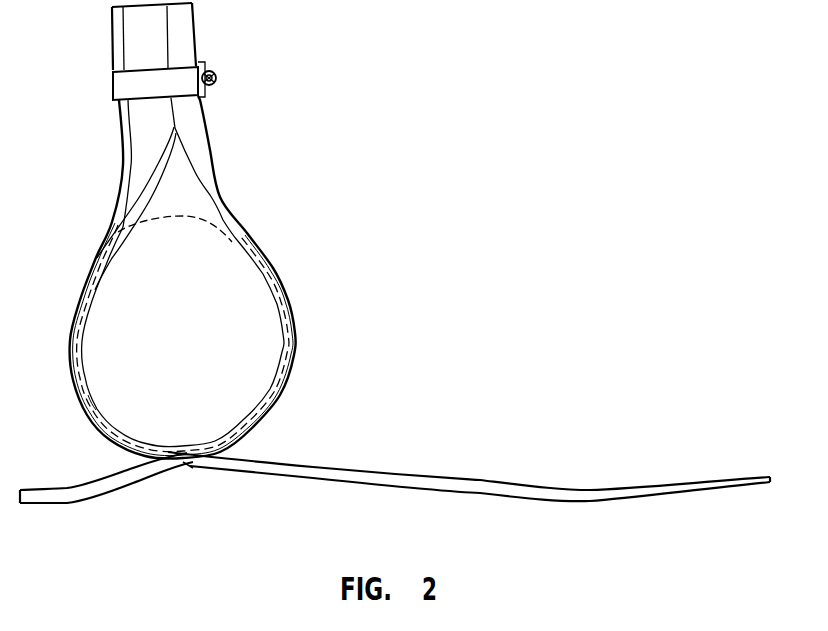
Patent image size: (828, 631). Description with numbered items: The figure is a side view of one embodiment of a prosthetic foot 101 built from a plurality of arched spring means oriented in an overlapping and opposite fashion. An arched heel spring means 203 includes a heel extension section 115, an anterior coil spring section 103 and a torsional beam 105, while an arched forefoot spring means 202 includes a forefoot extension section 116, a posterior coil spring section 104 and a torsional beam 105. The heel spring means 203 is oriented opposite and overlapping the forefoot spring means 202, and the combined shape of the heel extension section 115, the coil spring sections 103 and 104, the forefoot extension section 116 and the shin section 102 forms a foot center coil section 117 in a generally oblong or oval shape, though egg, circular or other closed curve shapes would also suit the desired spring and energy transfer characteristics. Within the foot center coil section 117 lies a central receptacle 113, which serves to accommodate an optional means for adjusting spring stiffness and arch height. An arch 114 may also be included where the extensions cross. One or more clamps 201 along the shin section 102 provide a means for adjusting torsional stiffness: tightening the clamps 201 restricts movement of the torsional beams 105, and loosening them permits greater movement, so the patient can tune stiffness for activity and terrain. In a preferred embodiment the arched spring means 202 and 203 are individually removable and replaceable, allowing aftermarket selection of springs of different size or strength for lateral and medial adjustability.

The shin section 102 is at (197, 33).
The clamp 201 is at (218, 78).
The torsional beam 105 is at (192, 123).
The receptacle 113 is at (178, 265).
The prosthetic foot 101 is at (275, 268).
The anterior coil spring section 103 is at (295, 325).
The arched heel spring means 203 is at (287, 397).
The foot center coil section 117 is at (122, 228).
The posterior coil spring section 104 is at (82, 300).
The arched forefoot spring means 202 is at (93, 400).
The heel extension section 115 is at (82, 487).
The forefoot extension section 116 is at (380, 478).
The arch 114 is at (192, 495).